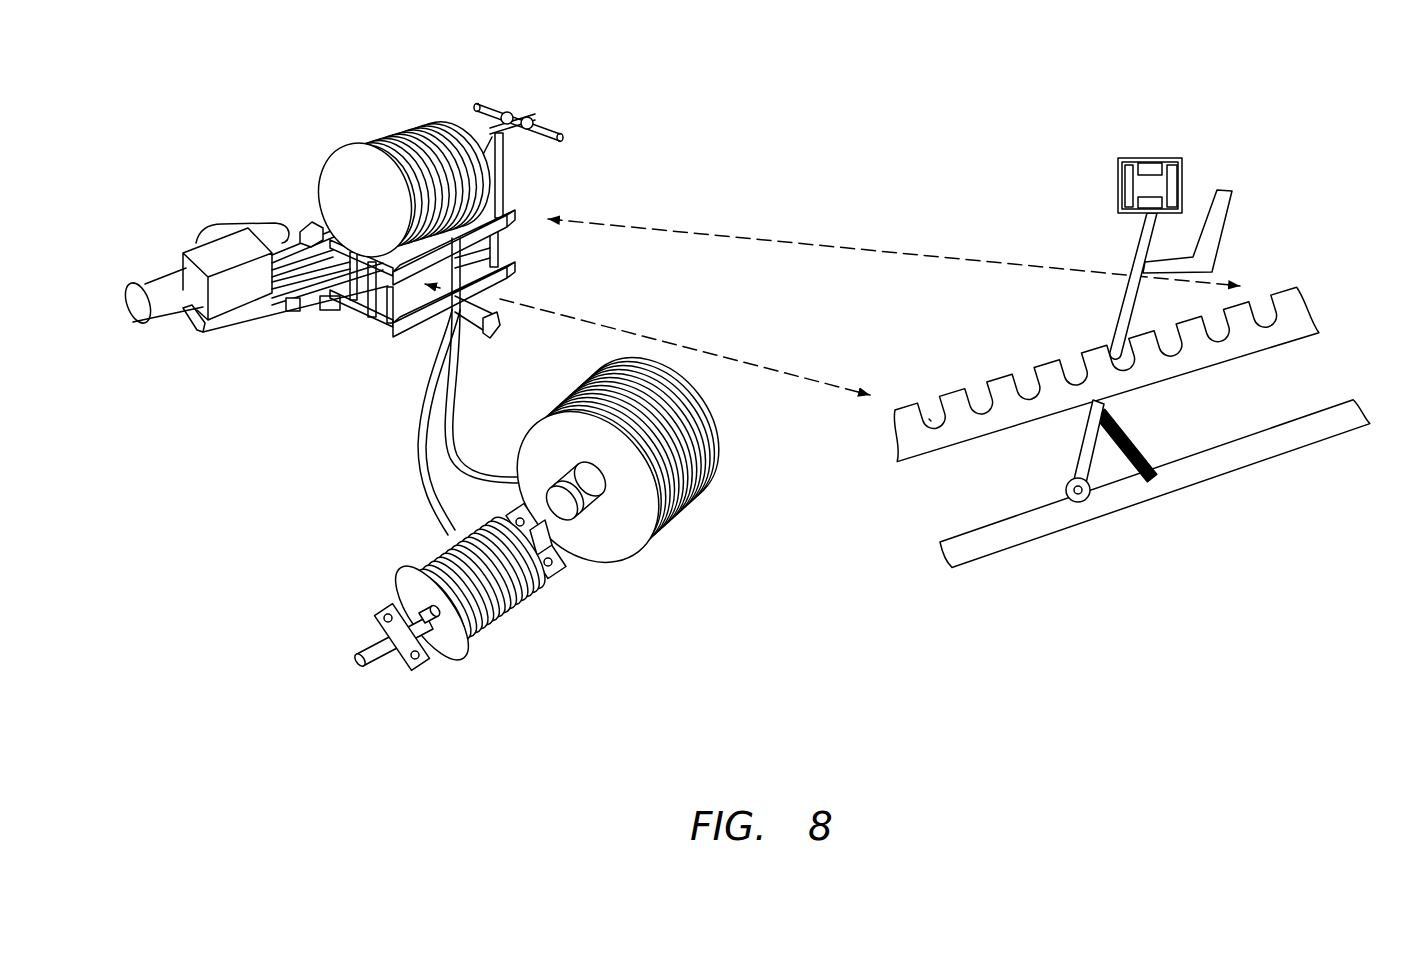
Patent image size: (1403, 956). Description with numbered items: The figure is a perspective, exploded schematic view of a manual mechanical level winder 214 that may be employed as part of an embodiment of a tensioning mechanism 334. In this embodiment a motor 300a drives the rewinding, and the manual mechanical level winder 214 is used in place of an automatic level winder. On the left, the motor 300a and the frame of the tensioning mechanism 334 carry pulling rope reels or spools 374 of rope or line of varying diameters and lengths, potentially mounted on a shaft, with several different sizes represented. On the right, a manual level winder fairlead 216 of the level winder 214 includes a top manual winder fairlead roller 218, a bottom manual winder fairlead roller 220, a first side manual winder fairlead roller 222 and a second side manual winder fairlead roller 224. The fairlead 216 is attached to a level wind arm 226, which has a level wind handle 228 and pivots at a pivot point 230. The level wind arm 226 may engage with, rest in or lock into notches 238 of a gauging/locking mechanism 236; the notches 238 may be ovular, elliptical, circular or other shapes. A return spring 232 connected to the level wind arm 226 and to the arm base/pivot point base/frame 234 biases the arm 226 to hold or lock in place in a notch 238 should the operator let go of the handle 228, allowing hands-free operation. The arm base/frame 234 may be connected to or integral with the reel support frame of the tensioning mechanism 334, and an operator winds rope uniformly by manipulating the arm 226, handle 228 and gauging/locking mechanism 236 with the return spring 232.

The motor 300a is at (235, 198).
The tensioning mechanism 334 is at (342, 128).
The pulling rope reel or spools 374 is at (386, 115).
The manual mechanical level winder 214 is at (1080, 318).
The manual level winder fairlead 216 is at (1150, 155).
The top manual winder fairlead roller 218 is at (1149, 162).
The bottom manual winder fairlead roller 220 is at (1142, 212).
The first side manual winder fairlead roller 222 is at (1118, 185).
The second side manual winder fairlead roller 224 is at (1182, 185).
The level wind arm 226 is at (1113, 323).
The level wind handle 228 is at (1223, 243).
The pivot point 230 is at (1085, 499).
The return spring 232 is at (1163, 430).
The arm base/pivot point base/frame 234 is at (1190, 490).
The gauging/locking mechanism 236 is at (886, 451).
The notches 238 is at (935, 427).